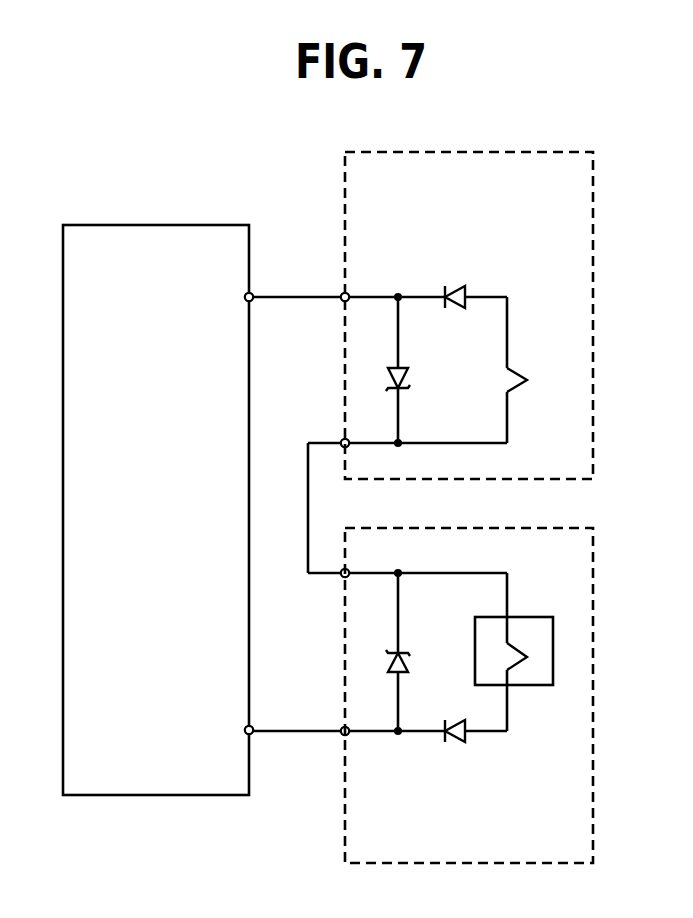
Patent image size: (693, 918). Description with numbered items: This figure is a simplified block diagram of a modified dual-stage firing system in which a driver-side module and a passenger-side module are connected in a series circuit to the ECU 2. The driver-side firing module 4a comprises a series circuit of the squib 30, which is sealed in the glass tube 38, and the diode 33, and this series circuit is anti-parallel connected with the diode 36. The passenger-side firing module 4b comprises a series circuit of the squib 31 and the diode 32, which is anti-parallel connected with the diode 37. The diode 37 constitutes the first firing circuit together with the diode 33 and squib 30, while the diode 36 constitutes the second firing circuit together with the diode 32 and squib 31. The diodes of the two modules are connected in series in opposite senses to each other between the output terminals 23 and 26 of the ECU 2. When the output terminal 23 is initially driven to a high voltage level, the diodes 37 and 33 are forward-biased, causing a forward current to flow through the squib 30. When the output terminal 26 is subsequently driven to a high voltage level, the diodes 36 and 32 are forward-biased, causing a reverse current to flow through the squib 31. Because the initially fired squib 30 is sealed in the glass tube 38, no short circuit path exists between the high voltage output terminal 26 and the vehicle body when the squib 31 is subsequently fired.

The ECU 2 is at (152, 225).
The output terminal 23 is at (253, 294).
The output terminal 26 is at (253, 727).
The driver-side firing module 4a is at (487, 152).
The passenger-side firing module 4b is at (490, 864).
The squib 30 is at (526, 655).
The squib 31 is at (520, 378).
The diode 32 is at (455, 288).
The diode 33 is at (458, 741).
The diode 36 is at (404, 670).
The diode 37 is at (404, 376).
The glass tube 38 is at (541, 686).